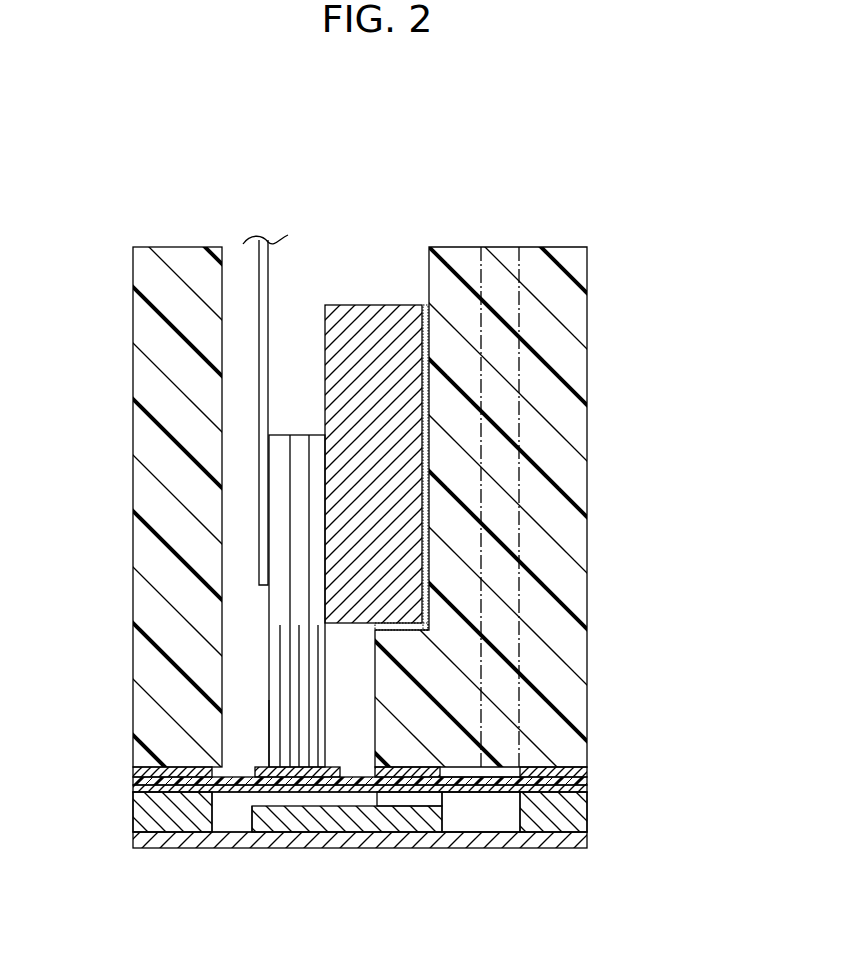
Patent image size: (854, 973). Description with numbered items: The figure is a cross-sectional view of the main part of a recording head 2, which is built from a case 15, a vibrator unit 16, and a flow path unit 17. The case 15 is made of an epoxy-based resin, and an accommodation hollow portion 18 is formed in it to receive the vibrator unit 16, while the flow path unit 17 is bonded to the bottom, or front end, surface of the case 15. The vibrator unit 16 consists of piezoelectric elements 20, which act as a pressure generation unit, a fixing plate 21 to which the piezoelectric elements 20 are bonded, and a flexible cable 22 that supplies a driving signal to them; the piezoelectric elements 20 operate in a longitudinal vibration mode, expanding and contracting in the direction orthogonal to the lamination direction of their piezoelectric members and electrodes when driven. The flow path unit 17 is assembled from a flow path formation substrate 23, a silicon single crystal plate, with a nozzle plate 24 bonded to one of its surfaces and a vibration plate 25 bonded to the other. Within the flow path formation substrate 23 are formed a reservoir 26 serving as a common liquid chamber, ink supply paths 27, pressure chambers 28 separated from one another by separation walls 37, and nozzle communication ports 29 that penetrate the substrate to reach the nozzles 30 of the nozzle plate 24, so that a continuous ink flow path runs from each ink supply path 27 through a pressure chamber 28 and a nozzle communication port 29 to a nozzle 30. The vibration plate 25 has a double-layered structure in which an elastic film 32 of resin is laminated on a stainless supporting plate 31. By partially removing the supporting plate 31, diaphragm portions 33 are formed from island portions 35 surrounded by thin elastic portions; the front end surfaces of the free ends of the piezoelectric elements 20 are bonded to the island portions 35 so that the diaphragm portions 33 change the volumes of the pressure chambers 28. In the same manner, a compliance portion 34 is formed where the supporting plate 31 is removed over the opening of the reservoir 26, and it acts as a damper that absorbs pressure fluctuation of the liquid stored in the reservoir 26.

The recording head 2 is at (589, 196).
The case 15 is at (568, 467).
The vibrator unit 16 is at (410, 158).
The flow path unit 17 is at (697, 755).
The accommodation hollow portion 18 is at (419, 242).
The piezoelectric elements 20 is at (297, 452).
The fixing plate 21 is at (389, 312).
The flexible cable 22 is at (268, 274).
The flow path formation substrate 23 is at (578, 808).
The nozzle plate 24 is at (578, 840).
The vibration plate 25 is at (650, 752).
The reservoir 26 is at (484, 820).
The ink supply paths 27 is at (412, 797).
The pressure chambers 28 is at (337, 797).
The nozzle communication ports 29 is at (229, 813).
The nozzles 30 is at (234, 840).
The supporting plate 31 is at (590, 772).
The elastic film 32 is at (590, 782).
The diaphragm portions 33 is at (258, 757).
The compliance portion 34 is at (492, 777).
The island portions 35 is at (334, 766).
The separation walls 37 is at (134, 790).